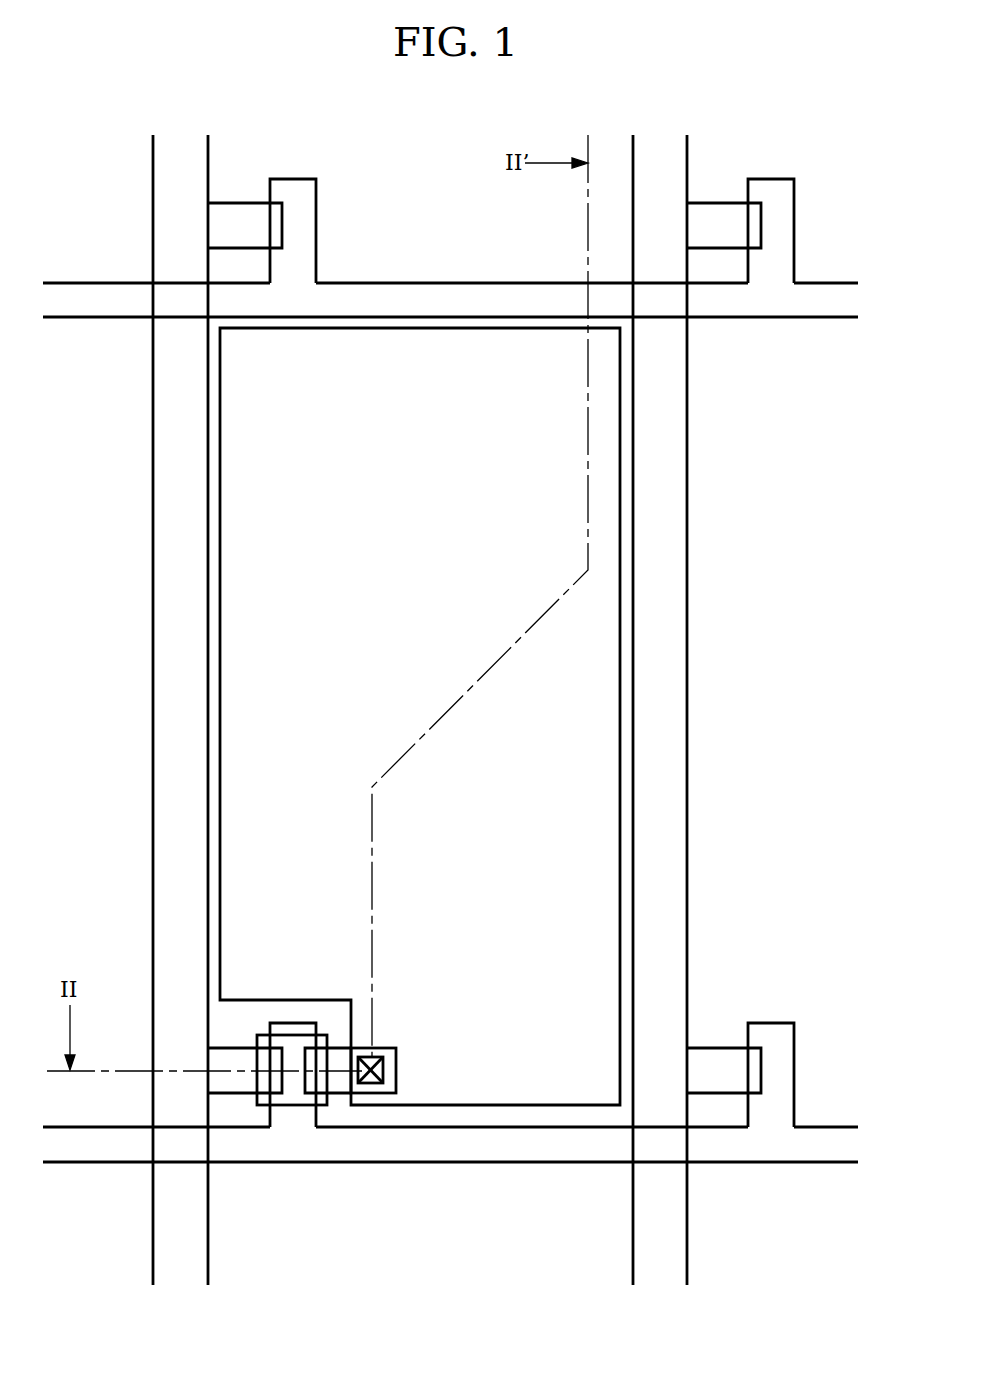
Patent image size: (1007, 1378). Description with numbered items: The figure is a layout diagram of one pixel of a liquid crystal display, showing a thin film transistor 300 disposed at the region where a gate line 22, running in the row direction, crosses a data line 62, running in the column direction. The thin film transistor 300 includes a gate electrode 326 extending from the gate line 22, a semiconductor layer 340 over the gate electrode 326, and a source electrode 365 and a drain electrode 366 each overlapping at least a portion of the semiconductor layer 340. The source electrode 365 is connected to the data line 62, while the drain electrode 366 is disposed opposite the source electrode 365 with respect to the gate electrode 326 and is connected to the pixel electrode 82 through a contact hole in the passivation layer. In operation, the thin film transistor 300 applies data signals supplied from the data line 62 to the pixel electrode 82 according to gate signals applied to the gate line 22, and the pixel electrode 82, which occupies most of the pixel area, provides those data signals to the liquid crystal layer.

The gate line 22 is at (493, 1163).
The data line 62 is at (153, 652).
The pixel electrode 82 is at (222, 588).
The thin film transistor 300 is at (354, 1072).
The gate electrode 326 is at (290, 1023).
The semiconductor layer 340 is at (303, 1105).
The source electrode 365 is at (279, 1105).
The drain electrode 366 is at (396, 1062).